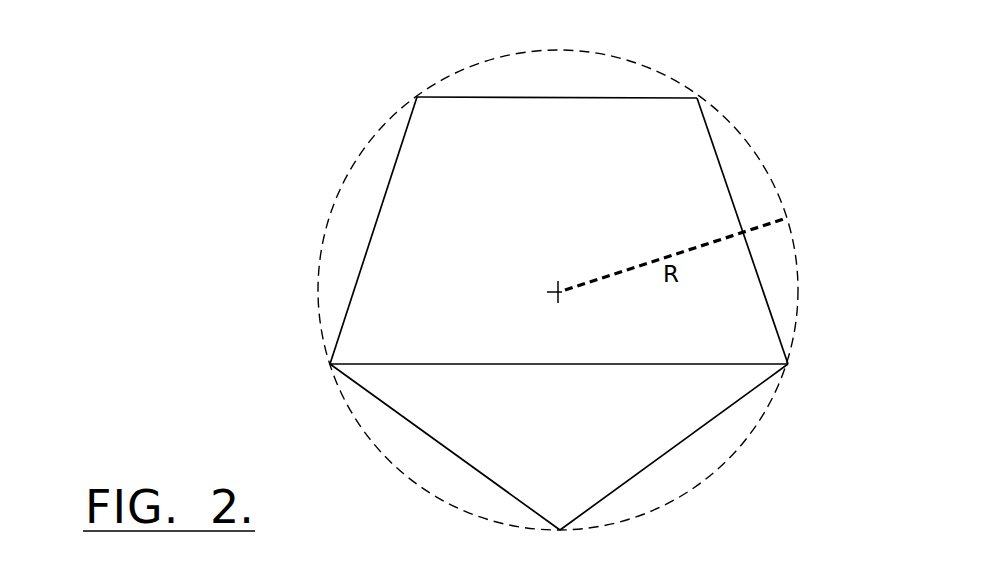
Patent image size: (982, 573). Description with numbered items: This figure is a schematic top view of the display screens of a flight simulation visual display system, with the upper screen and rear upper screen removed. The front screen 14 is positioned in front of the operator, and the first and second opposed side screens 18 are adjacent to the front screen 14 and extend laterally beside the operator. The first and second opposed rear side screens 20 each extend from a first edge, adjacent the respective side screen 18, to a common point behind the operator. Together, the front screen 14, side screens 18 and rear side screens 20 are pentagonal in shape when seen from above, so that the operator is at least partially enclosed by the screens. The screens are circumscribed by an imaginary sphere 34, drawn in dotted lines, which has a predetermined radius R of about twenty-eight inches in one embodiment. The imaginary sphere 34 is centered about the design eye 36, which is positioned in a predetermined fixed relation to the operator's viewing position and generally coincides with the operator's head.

The front screen 14 is at (577, 97).
The first and second opposed side screens 18 is at (718, 162).
The first and second opposed rear side screens 20 is at (452, 453).
The imaginary sphere 34 is at (798, 263).
The design eye 36 is at (547, 292).